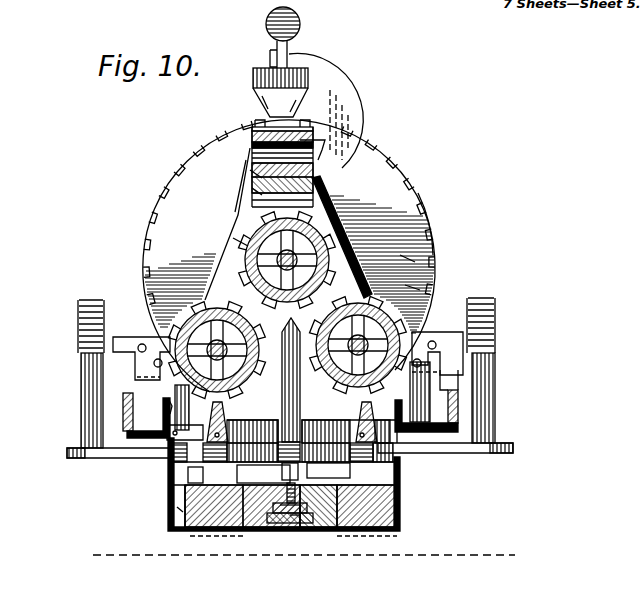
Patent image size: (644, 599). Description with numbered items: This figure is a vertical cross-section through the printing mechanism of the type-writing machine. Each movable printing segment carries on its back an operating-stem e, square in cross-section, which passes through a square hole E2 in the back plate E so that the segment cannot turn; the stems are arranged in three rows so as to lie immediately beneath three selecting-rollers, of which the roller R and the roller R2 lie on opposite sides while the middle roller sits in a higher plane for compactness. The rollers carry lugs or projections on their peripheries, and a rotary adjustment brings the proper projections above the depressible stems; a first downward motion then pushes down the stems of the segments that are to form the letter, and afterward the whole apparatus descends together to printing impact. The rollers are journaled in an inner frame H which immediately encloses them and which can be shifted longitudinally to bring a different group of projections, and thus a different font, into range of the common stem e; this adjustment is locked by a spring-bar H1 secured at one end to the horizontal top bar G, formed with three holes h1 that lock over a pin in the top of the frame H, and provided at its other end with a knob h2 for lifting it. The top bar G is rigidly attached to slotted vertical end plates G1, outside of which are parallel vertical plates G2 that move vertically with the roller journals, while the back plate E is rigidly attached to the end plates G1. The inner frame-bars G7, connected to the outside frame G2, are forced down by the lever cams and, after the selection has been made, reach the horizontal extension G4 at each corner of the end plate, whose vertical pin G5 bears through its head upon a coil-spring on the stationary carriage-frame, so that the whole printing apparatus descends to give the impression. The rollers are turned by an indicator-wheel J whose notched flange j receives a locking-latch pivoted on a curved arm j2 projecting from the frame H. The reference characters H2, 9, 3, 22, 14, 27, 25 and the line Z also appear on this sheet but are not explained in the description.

The frame H is at (332, 222).
The notched flange j is at (195, 140).
The indicator-wheel J is at (395, 228).
The curved arm j2 is at (300, 55).
The knob h2 is at (262, 86).
The horizontal top bar G is at (312, 117).
The spring-bar H1 is at (322, 148).
The vertical end plates G1 is at (250, 170).
The holes h1 is at (233, 238).
The selecting-roller R is at (188, 308).
The selecting-roller R2 is at (435, 290).
The operating-stem e is at (222, 420).
The vertical plates G2 is at (122, 348).
The frame-bars G7 is at (123, 400).
The disk part H2 is at (188, 410).
The vertical pin G5 is at (93, 372).
The horizontal extension G4 is at (77, 456).
The square hole E2 is at (270, 412).
The back plate E is at (178, 493).
The base block 9 is at (278, 506).
The base block 3 is at (312, 506).
The part 22 is at (177, 507).
The part 14 is at (293, 522).
The part 27 is at (297, 530).
The part 25 is at (302, 522).
The datum line Z is at (311, 556).